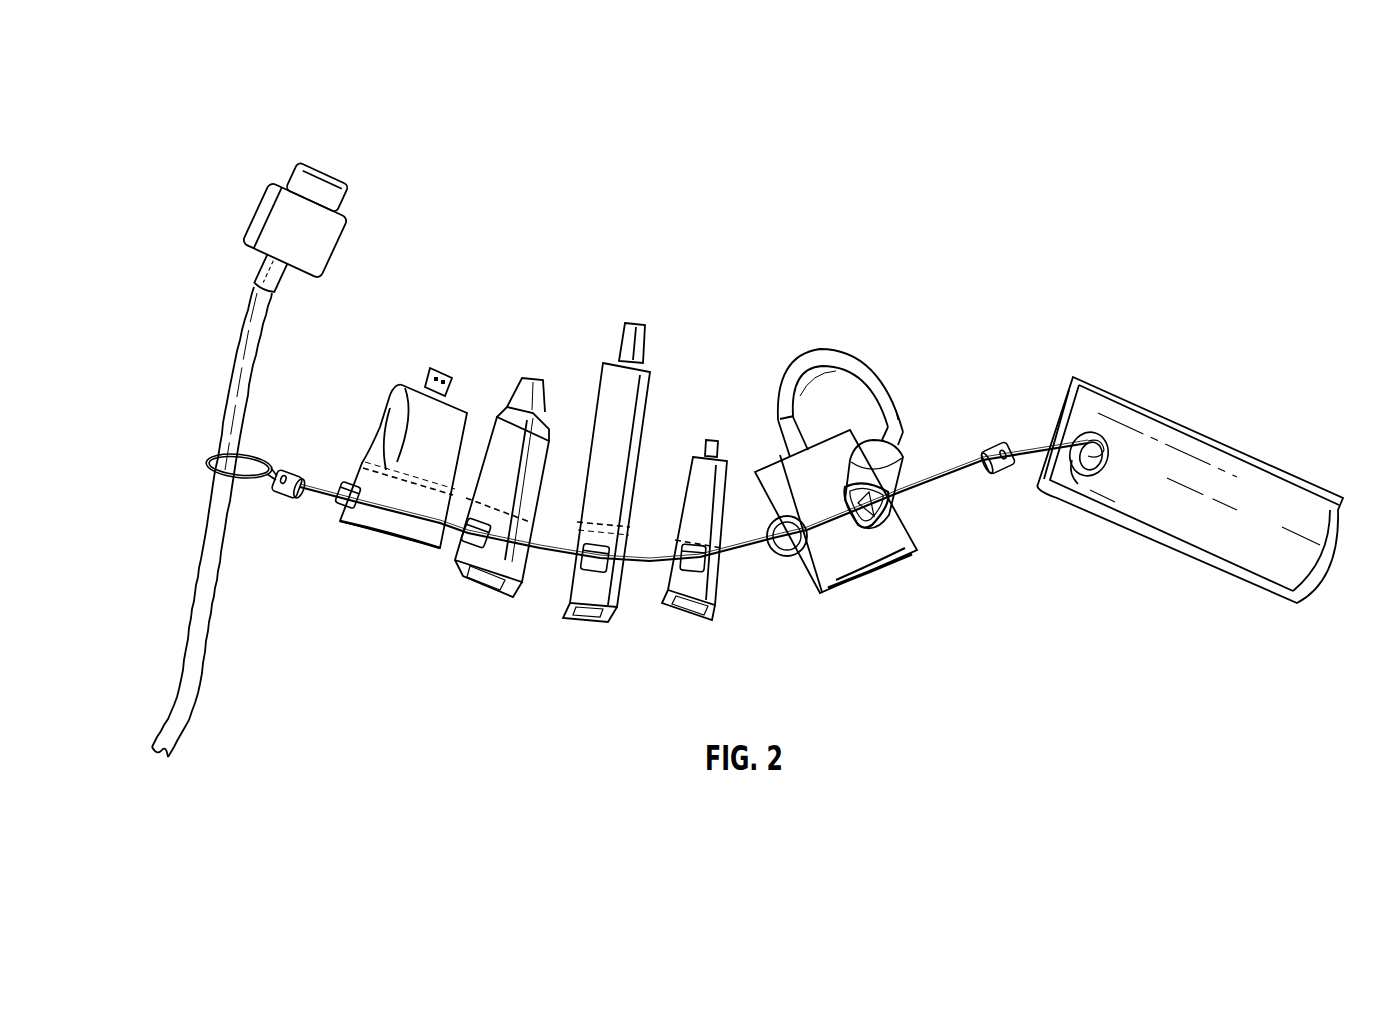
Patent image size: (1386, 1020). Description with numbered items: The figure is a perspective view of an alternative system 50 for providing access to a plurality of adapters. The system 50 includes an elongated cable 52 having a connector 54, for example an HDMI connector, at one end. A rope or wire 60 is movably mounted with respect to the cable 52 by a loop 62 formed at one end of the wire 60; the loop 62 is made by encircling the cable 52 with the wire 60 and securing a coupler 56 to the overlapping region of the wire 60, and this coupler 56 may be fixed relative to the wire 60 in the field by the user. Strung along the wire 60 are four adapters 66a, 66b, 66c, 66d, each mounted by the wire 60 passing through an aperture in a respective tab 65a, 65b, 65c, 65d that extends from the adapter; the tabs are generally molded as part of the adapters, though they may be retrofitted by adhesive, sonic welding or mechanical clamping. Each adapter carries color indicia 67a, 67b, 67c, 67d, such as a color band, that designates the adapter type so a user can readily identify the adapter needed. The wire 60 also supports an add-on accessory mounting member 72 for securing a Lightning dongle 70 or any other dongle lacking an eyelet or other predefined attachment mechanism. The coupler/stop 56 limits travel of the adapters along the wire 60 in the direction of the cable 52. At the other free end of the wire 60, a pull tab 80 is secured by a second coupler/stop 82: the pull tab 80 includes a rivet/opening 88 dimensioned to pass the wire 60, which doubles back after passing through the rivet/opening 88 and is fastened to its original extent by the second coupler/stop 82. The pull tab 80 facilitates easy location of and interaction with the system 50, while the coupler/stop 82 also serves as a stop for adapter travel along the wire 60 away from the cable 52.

The system 50 is at (232, 137).
The elongated cable 52 is at (190, 598).
The connector 54 is at (258, 206).
The coupler/stop 56 is at (281, 500).
The wire 60 is at (955, 469).
The loop 62 is at (206, 460).
The tab 65a is at (345, 507).
The tab 65b is at (470, 550).
The tab 65c is at (592, 576).
The tab 65d is at (713, 592).
The adapter 66a is at (400, 518).
The adapter 66b is at (505, 583).
The adapter 66c is at (610, 605).
The adapter 66d is at (685, 590).
The color indicia 67a is at (418, 476).
The color indicia 67b is at (535, 470).
The color indicia 67c is at (622, 522).
The color indicia 67d is at (718, 532).
The dongle 70 is at (876, 584).
The add-on accessory mounting member 72 is at (787, 558).
The pull tab 80 is at (1158, 521).
The second coupler/stop 82 is at (996, 444).
The rivet/opening 88 is at (1082, 478).